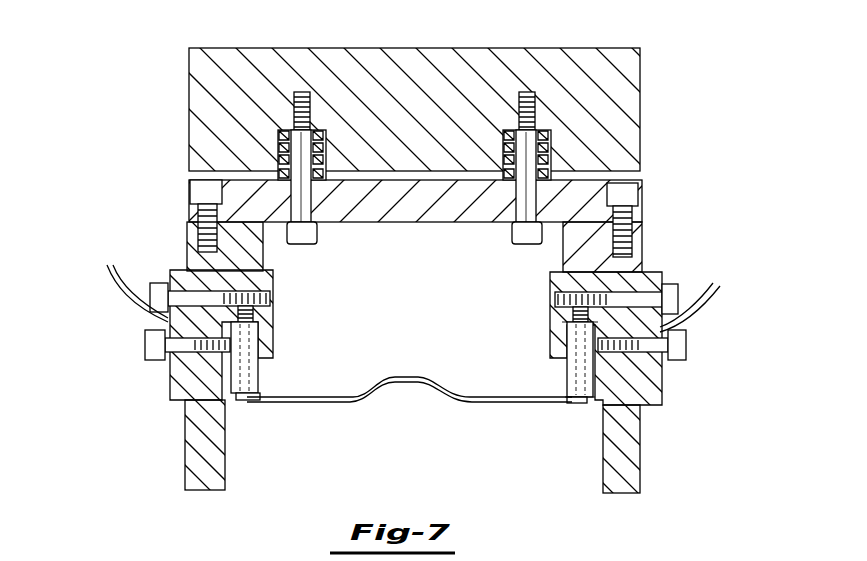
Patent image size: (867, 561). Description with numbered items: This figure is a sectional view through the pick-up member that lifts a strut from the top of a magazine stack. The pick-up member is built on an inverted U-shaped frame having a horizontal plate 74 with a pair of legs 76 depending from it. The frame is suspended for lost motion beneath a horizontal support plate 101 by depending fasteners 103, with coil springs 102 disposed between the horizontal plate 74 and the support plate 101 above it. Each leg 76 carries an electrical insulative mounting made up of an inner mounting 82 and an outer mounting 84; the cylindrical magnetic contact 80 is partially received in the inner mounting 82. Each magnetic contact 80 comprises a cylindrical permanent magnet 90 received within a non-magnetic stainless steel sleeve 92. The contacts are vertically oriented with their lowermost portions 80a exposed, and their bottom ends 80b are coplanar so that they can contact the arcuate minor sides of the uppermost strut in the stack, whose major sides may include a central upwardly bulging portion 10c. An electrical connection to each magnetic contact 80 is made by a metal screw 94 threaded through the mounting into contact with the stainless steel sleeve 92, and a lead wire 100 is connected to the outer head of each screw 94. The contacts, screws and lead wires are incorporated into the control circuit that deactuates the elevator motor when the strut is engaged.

The central upwardly bulging portion 10c is at (417, 380).
The horizontal plate 74 is at (587, 203).
The leg 76 is at (190, 465).
The magnetic contact 80 is at (409, 401).
The lowermost portion 80a is at (238, 385).
The bottom end 80b is at (250, 402).
The inner mounting 82 is at (288, 316).
The outer mounting 84 is at (175, 272).
The cylindrical permanent magnet 90 is at (560, 353).
The non-magnetic stainless steel sleeve 92 is at (558, 395).
The metal screw 94 is at (172, 370).
The lead wire 100 is at (128, 300).
The horizontal support plate 101 is at (432, 102).
The coil spring 102 is at (300, 143).
The depending fastener 103 is at (300, 162).